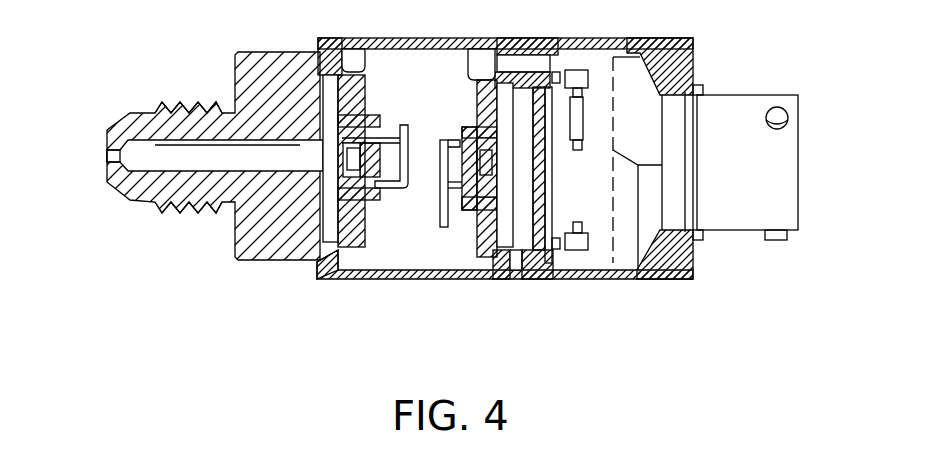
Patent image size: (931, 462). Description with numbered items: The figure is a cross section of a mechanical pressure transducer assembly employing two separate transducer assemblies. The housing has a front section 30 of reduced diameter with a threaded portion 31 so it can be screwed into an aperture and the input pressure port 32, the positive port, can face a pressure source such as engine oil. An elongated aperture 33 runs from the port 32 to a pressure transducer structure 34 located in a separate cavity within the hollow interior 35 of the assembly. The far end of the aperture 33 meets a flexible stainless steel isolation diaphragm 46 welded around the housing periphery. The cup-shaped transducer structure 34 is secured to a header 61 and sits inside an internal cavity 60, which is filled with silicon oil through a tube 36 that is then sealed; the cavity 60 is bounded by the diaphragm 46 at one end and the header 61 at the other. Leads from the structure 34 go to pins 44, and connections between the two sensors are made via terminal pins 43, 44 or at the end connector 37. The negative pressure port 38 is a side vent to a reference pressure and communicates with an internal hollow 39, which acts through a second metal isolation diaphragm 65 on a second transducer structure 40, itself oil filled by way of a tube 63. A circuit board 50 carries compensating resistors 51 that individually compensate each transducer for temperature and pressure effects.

The front section 30 is at (155, 107).
The threaded portion 31 is at (167, 213).
The input pressure port 32 is at (106, 158).
The elongated aperture 33 is at (137, 167).
The pressure transducer structure 34 is at (320, 242).
The hollow interior 35 is at (377, 258).
The tube 36 is at (406, 125).
The end connector 37 is at (782, 194).
The negative pressure port 38 is at (517, 281).
The internal hollow 39 is at (527, 97).
The second transducer structure 40 is at (477, 228).
The terminal pin 43 is at (443, 192).
The pins 44 is at (383, 137).
The isolation diaphragm 46 is at (338, 252).
The circuit board 50 is at (542, 215).
The compensating resistors 51 is at (593, 100).
The internal cavity 60 is at (340, 80).
The header 61 is at (358, 165).
The tube 63 is at (443, 145).
The second metal isolation diaphragm 65 is at (554, 72).